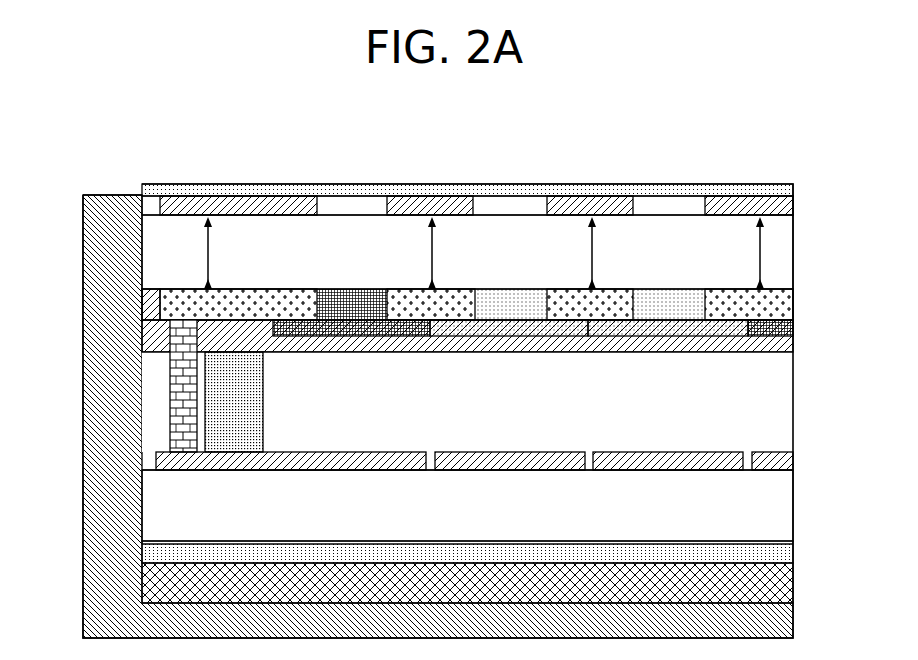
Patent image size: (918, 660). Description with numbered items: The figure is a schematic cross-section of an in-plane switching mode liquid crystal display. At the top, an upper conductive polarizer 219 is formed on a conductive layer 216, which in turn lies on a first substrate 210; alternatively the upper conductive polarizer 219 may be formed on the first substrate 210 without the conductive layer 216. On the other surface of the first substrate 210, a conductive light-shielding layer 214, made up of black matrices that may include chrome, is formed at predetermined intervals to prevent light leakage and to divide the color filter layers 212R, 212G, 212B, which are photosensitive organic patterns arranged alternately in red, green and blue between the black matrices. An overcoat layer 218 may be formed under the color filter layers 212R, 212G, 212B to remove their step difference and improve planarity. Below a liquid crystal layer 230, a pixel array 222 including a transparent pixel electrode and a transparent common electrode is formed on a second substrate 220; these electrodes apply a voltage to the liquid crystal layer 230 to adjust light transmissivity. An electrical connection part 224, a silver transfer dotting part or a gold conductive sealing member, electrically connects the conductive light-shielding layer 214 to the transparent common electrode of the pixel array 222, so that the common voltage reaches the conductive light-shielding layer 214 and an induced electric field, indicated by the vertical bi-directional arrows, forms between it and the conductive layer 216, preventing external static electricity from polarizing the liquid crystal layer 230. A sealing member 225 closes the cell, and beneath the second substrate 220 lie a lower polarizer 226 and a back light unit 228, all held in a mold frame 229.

The red color filter layer 212R is at (346, 298).
The green color filter layer 212G is at (510, 296).
The blue color filter layer 212B is at (668, 298).
The upper conductive polarizer 219 is at (790, 191).
The conductive layer 216 is at (793, 206).
The first substrate 210 is at (780, 254).
The conductive light-shielding layer 214 is at (780, 303).
The overcoat layer 218 is at (785, 345).
The electrical connection part 224 is at (178, 345).
The sealing member 225 is at (264, 405).
The liquid crystal layer 230 is at (467, 402).
The pixel array 222 is at (785, 462).
The second substrate 220 is at (782, 506).
The lower polarizer 226 is at (782, 553).
The back light unit 228 is at (782, 583).
The mold frame 229 is at (782, 620).